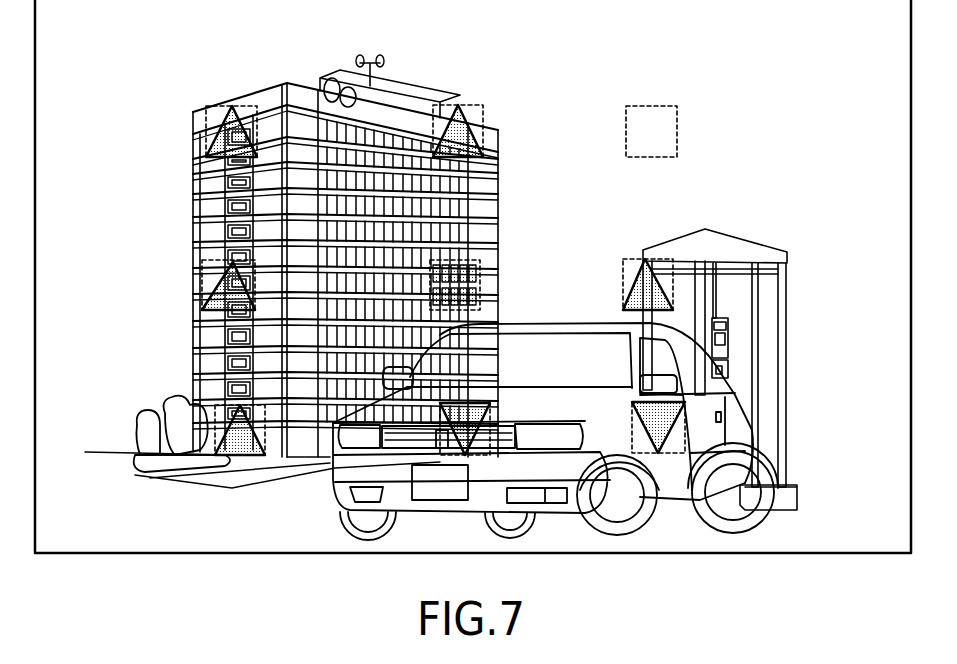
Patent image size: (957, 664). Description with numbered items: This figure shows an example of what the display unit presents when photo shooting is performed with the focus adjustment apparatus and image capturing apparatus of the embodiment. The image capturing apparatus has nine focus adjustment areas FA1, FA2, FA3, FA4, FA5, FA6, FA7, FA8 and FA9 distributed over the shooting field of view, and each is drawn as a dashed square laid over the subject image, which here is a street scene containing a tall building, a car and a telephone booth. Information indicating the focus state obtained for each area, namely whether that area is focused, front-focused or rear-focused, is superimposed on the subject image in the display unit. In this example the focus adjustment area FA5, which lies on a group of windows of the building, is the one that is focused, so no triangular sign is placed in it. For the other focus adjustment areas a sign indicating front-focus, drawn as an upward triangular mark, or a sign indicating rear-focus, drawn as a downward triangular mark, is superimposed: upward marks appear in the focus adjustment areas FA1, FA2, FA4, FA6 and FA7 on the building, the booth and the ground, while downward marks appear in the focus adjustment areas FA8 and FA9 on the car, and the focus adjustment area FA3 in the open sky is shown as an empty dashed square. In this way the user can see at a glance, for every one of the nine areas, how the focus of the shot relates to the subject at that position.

The focus adjustment area FA1 is at (240, 100).
The focus adjustment area FA2 is at (470, 100).
The focus adjustment area FA3 is at (660, 106).
The focus adjustment area FA4 is at (200, 263).
The focus adjustment area FA5 is at (482, 296).
The focus adjustment area FA6 is at (632, 258).
The focus adjustment area FA7 is at (268, 455).
The focus adjustment area FA8 is at (473, 403).
The focus adjustment area FA9 is at (630, 422).